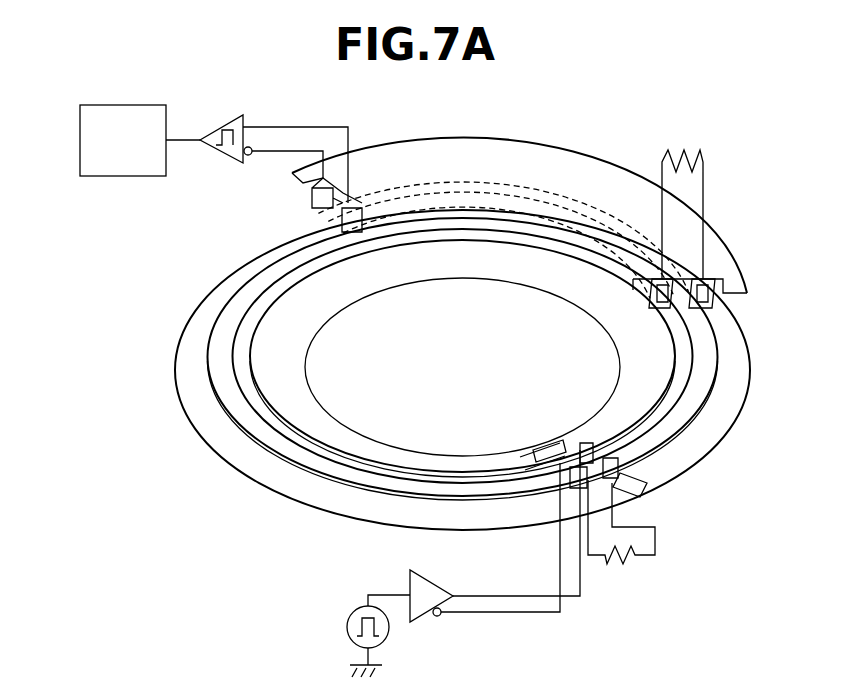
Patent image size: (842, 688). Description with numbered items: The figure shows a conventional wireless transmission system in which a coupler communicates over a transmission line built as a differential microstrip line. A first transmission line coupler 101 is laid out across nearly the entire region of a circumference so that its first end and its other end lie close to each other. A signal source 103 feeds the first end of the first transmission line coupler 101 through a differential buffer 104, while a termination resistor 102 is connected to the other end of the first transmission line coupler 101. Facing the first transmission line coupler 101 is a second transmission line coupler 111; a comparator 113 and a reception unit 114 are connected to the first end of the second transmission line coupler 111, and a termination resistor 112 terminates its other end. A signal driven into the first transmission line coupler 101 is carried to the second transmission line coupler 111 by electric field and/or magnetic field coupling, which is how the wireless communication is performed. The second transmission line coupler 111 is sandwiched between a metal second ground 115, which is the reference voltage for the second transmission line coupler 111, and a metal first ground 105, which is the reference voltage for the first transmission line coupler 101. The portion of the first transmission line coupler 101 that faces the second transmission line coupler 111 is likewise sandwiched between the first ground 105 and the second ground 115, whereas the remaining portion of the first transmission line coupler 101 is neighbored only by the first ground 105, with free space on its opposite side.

The first transmission line coupler 101 is at (313, 430).
The termination resistor 102 is at (628, 562).
The signal source 103 is at (350, 612).
The differential buffer 104 is at (427, 573).
The first ground 105 is at (188, 385).
The second transmission line coupler 111 is at (495, 185).
The termination resistor 112 is at (682, 150).
The comparator 113 is at (230, 164).
The reception unit 114 is at (120, 178).
The second ground 115 is at (558, 160).